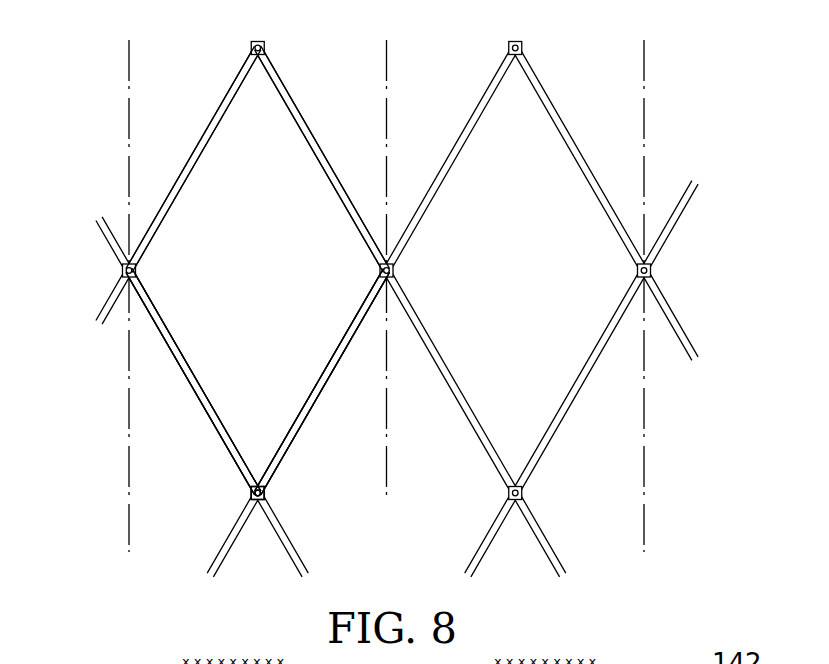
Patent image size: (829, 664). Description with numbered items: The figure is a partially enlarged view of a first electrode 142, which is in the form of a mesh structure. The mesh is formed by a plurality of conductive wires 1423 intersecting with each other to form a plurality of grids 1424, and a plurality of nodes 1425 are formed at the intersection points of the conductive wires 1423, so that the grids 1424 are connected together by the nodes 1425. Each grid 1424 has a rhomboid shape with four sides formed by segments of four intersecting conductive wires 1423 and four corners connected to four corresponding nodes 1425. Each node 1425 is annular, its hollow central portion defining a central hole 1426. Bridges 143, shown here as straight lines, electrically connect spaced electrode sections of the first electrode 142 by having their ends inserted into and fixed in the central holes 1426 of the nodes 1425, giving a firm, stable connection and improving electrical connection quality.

The first electrode 142 is at (515, 526).
The bridge 143 is at (644, 482).
The conductive wire 1423 is at (352, 333).
The grid 1424 is at (243, 412).
The node 1425 is at (256, 500).
The central hole 1426 is at (270, 491).